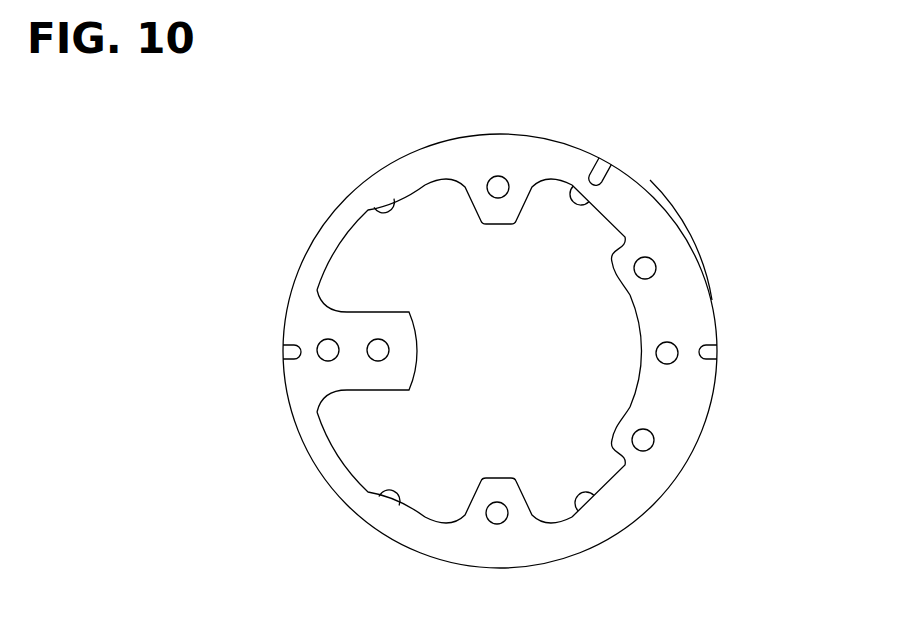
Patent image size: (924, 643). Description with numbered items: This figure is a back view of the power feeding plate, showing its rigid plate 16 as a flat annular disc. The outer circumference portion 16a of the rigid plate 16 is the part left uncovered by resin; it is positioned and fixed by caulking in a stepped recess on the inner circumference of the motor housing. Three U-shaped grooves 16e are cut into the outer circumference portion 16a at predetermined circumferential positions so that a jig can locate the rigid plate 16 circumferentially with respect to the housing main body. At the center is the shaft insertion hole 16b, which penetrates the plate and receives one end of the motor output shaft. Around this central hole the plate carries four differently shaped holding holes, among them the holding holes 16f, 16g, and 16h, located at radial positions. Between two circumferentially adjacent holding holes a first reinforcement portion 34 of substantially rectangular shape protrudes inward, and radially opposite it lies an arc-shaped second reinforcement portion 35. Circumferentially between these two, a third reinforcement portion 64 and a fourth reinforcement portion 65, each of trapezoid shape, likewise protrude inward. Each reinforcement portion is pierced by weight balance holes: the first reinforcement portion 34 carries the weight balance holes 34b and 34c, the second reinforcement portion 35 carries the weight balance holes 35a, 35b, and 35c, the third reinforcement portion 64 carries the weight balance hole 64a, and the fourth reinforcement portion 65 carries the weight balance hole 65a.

The rigid plate 16 is at (684, 214).
The outer circumference portion 16a is at (702, 255).
The shaft insertion hole 16b is at (402, 358).
The U-shaped groove 16e is at (285, 352).
The holding hole 16f is at (387, 208).
The holding hole 16g is at (570, 188).
The holding hole 16h is at (595, 496).
The first reinforcement portion 34 is at (355, 325).
The weight balance hole 34b is at (323, 353).
The weight balance hole 34c is at (378, 350).
The second reinforcement portion 35 is at (672, 309).
The weight balance hole 35a is at (645, 267).
The weight balance hole 35b is at (669, 352).
The weight balance hole 35c is at (654, 441).
The third reinforcement portion 64 is at (509, 208).
The weight balance hole 64a is at (497, 186).
The fourth reinforcement portion 65 is at (506, 496).
The weight balance hole 65a is at (497, 515).